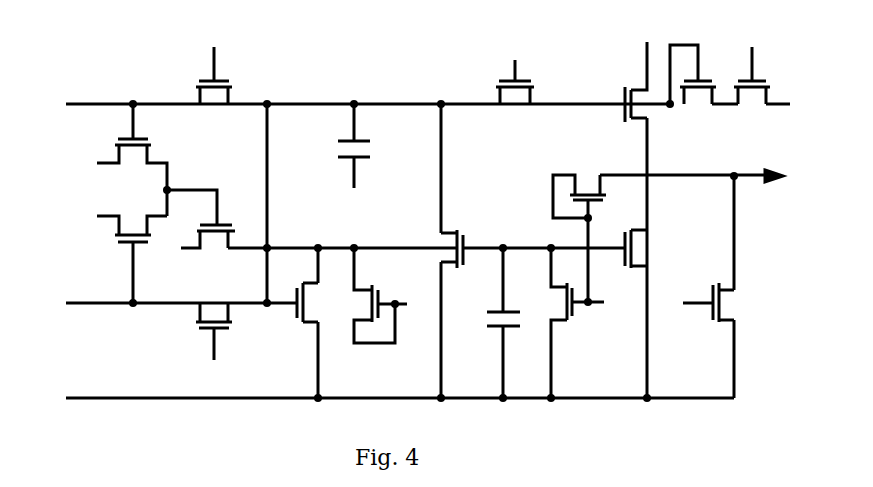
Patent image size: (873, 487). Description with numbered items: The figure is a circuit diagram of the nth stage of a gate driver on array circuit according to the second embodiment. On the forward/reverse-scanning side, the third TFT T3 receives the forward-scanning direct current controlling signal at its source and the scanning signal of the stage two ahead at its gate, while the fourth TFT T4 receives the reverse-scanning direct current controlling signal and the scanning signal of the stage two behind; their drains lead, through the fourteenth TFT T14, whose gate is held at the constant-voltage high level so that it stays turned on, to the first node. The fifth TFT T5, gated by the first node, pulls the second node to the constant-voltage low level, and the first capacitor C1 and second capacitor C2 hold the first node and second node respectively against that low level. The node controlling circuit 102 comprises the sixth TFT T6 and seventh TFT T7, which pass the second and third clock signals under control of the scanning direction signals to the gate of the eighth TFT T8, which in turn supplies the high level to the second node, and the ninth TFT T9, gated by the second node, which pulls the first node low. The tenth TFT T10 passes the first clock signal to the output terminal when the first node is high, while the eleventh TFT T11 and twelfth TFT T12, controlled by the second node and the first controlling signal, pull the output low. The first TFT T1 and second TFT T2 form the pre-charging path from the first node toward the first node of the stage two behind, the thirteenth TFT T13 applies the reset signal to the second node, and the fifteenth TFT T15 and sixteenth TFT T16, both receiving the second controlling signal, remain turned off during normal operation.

The node controlling circuit 102 is at (429, 216).
The first TFT T1 is at (704, 77).
The second TFT T2 is at (762, 78).
The third TFT T3 is at (214, 80).
The fourth TFT T4 is at (214, 331).
The fifth TFT T5 is at (309, 302).
The sixth TFT T6 is at (132, 177).
The seventh TFT T7 is at (132, 259).
The eighth TFT T8 is at (201, 224).
The ninth TFT T9 is at (443, 251).
The tenth TFT T10 is at (629, 95).
The eleventh TFT T11 is at (643, 249).
The twelfth TFT T12 is at (715, 302).
The thirteenth TFT T13 is at (380, 296).
The fourteenth TFT T14 is at (515, 94).
The fifteenth TFT T15 is at (569, 323).
The sixteenth TFT T16 is at (579, 232).
The first capacitor C1 is at (363, 146).
The second capacitor C2 is at (512, 323).